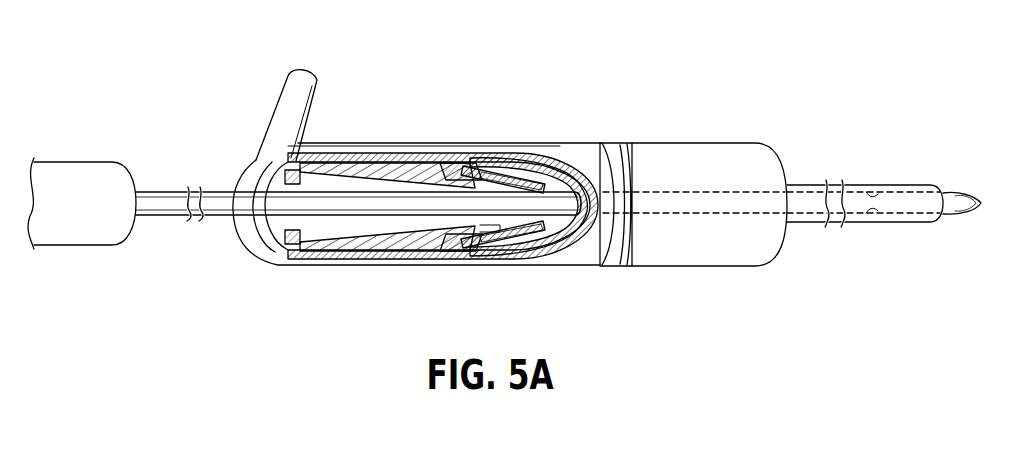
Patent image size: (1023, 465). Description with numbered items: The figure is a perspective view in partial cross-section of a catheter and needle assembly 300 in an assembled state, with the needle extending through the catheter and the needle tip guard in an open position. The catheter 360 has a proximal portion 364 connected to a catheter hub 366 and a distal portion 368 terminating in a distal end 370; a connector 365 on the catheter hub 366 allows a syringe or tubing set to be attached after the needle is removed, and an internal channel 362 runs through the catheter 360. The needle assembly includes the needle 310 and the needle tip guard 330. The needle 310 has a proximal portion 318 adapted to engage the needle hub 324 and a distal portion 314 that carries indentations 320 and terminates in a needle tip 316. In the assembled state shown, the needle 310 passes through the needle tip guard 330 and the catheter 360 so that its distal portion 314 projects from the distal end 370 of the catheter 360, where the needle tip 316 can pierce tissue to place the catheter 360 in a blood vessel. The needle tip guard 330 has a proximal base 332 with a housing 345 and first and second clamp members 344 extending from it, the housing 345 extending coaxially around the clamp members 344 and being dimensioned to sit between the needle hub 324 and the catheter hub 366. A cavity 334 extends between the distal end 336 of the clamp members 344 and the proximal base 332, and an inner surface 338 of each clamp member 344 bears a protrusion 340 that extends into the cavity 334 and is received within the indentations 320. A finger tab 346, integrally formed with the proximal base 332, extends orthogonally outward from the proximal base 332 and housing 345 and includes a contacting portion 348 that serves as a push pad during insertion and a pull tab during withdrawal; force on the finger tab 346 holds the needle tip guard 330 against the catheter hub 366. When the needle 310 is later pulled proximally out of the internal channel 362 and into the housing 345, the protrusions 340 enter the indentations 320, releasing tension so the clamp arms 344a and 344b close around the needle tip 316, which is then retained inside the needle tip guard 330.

The catheter and needle assembly 300 is at (731, 35).
The needle 310 is at (179, 187).
The distal portion 314 is at (958, 193).
The needle tip 316 is at (967, 212).
The proximal portion 318 is at (145, 216).
The indentations 320 is at (872, 214).
The needle hub 324 is at (75, 170).
The needle tip guard 330 is at (480, 160).
The proximal base 332 is at (252, 172).
The cavity 334 is at (478, 226).
The distal end 336 is at (525, 163).
The inner surface 338 is at (353, 229).
The protrusion 340 is at (436, 170).
The clamp members 344 is at (395, 163).
The clamp arm 344a is at (530, 168).
The clamp arm 344b is at (537, 240).
The housing 345 is at (339, 151).
The finger tab 346 is at (286, 96).
The contacting portion 348 is at (277, 123).
The catheter 360 is at (857, 184).
The internal channel 362 is at (830, 223).
The proximal portion 364 is at (807, 184).
The connector 365 is at (603, 148).
The catheter hub 366 is at (697, 143).
The distal portion 368 is at (900, 184).
The distal end 370 is at (940, 223).